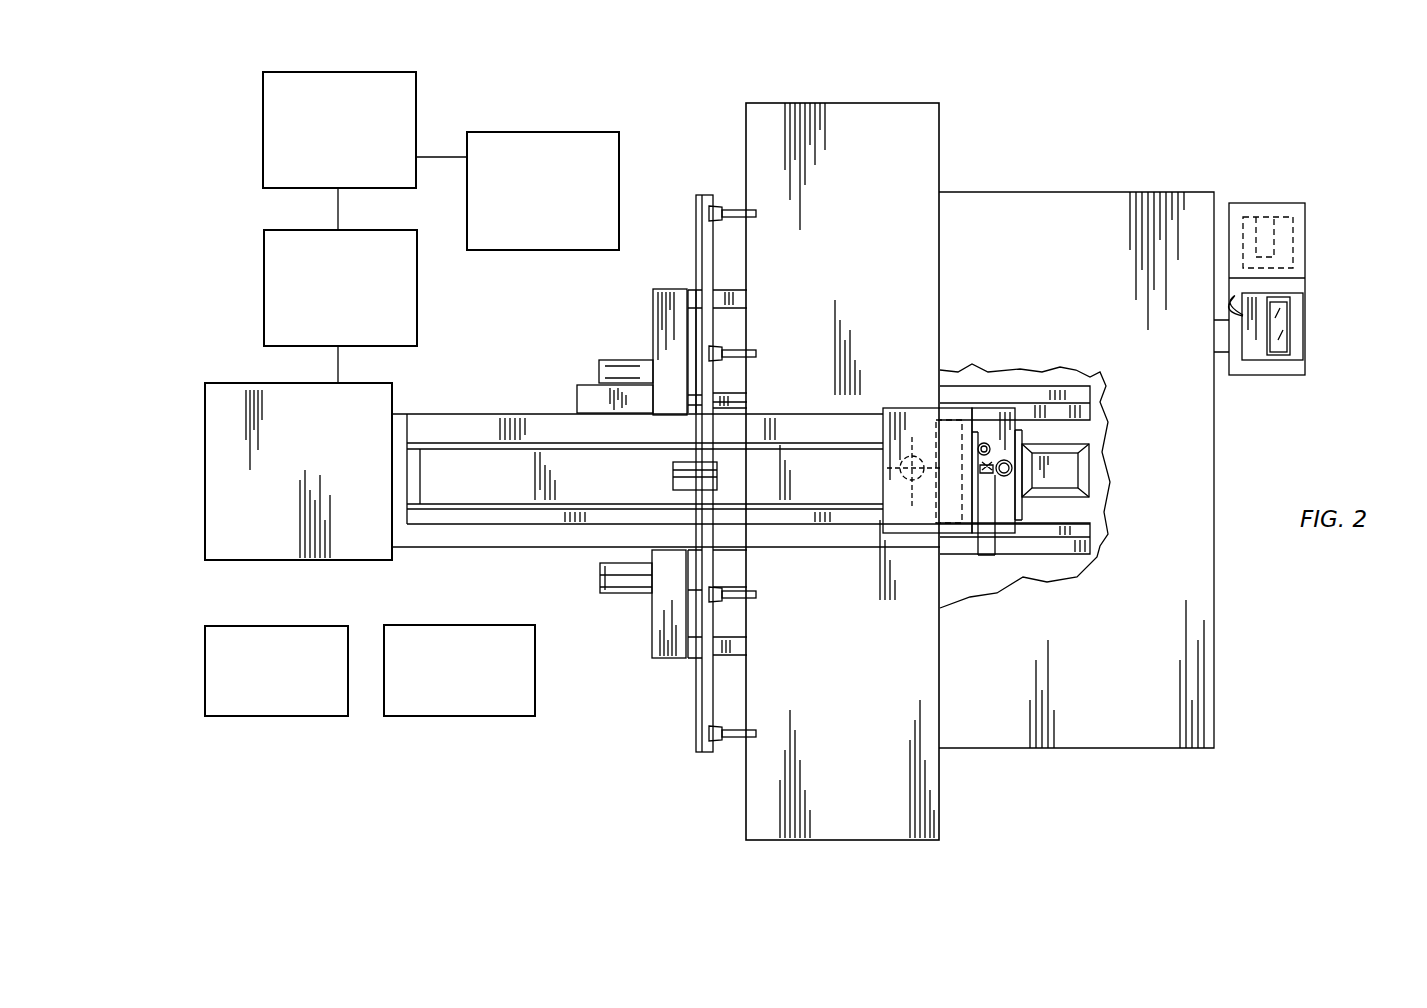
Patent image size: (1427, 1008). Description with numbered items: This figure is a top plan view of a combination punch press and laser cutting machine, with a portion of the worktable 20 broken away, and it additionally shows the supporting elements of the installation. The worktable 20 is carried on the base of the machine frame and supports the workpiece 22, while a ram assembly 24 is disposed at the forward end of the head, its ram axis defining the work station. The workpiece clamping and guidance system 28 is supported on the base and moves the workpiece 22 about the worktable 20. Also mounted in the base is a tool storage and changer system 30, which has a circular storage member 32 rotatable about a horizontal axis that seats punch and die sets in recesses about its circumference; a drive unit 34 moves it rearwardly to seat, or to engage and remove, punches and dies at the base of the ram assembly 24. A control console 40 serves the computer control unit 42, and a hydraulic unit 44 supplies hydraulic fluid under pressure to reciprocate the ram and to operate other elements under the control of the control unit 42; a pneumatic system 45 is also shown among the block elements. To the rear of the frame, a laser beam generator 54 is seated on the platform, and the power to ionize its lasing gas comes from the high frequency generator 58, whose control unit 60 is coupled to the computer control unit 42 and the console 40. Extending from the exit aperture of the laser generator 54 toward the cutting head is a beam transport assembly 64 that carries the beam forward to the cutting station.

The worktable 20 is at (1107, 217).
The workpiece 22 is at (860, 128).
The ram assembly 24 is at (912, 440).
The workpiece clamping and guidance system 28 is at (693, 693).
The tool storage and changer system 30 is at (1027, 513).
The circular storage member 32 is at (1002, 500).
The drive unit 34 is at (1062, 477).
The control console 40 is at (1305, 283).
The computer control unit 42 is at (563, 132).
The hydraulic unit 44 is at (535, 681).
The pneumatic system 45 is at (302, 717).
The laser beam generator 54 is at (355, 507).
The high frequency generator 58 is at (417, 318).
The control unit 60 is at (417, 107).
The beam transport assembly 64 is at (558, 552).